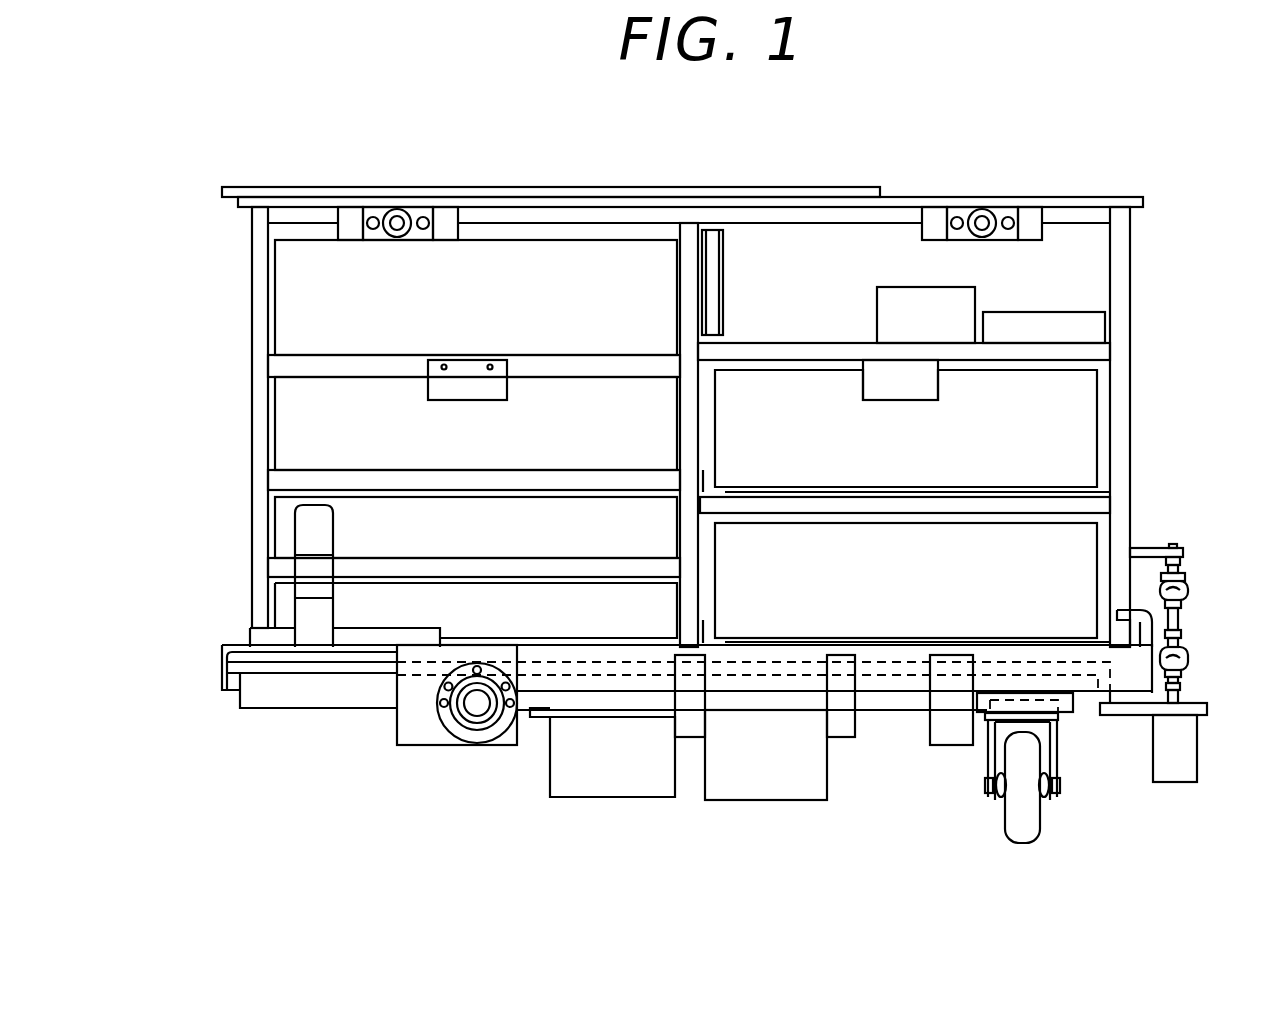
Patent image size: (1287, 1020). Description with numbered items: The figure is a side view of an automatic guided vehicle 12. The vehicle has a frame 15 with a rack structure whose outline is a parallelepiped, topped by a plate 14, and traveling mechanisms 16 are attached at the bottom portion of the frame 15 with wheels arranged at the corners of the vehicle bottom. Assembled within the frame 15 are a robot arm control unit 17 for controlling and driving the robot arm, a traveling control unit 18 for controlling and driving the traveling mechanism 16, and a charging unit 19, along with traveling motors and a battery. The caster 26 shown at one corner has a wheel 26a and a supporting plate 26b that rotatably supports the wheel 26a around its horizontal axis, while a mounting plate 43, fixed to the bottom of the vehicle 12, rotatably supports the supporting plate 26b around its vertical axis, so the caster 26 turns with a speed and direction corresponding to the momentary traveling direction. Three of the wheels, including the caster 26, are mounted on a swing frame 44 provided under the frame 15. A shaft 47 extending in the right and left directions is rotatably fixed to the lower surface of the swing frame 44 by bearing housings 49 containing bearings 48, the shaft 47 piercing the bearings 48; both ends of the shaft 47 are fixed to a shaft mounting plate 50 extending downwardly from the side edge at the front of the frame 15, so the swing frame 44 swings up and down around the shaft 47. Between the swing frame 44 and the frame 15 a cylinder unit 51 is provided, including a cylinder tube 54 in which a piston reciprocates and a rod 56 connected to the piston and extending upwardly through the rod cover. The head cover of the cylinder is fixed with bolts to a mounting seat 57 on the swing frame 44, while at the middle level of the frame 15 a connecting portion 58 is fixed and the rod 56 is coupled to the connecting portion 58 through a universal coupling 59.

The automatic guided vehicle 12 is at (1068, 180).
The top plate 14 is at (641, 187).
The frame 15 is at (252, 436).
The traveling mechanism 16 is at (1013, 794).
The robot arm control unit 17 is at (1085, 405).
The traveling control unit 18 is at (1080, 555).
The charging unit 19 is at (628, 797).
The caster 26 is at (1013, 794).
The wheel 26a is at (1010, 815).
The supporting plate 26b is at (980, 760).
The mounting plate 43 is at (1057, 695).
The swing frame 44 is at (305, 672).
The shaft 47 is at (485, 708).
The bearing 48 is at (475, 727).
The bearing housing 49 is at (460, 737).
The shaft mounting plate 50 is at (407, 745).
The cylinder unit 51 is at (1190, 674).
The cylinder tube 54 is at (1197, 755).
The rod 56 is at (1183, 698).
The mounting seat 57 is at (1207, 710).
The connecting portion 58 is at (1183, 553).
The universal coupling 59 is at (1188, 615).